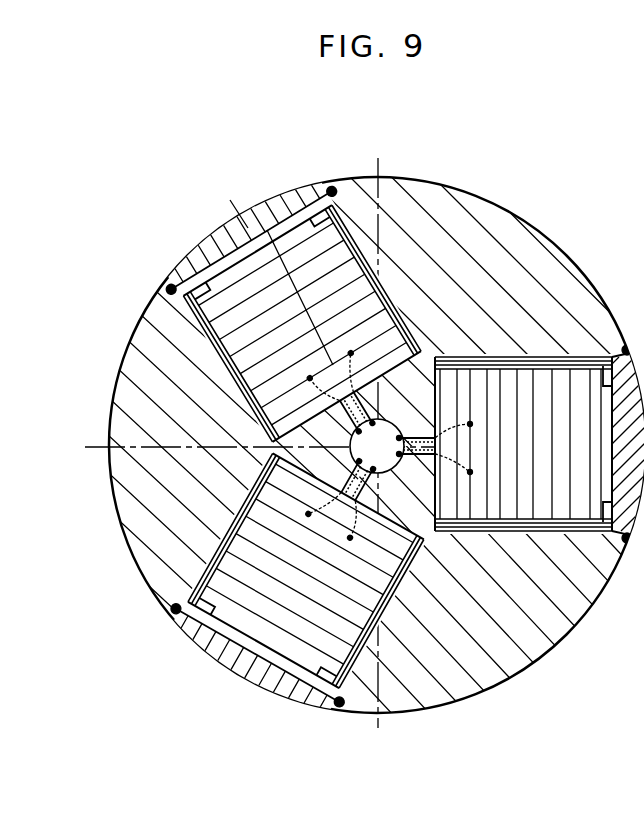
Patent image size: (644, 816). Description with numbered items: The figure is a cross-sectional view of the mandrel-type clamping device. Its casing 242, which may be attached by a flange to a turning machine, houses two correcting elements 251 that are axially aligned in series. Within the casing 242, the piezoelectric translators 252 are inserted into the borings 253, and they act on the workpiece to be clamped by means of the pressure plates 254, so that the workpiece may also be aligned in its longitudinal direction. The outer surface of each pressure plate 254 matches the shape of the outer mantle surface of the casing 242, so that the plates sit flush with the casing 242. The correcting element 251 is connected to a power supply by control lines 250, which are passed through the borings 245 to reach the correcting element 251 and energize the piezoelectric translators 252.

The casing 242 is at (462, 227).
The borings 245 is at (390, 468).
The control lines 250 is at (434, 360).
The correcting element 251 is at (246, 706).
The piezoelectric translators 252 is at (318, 550).
The borings 253 is at (217, 568).
The pressure plates 254 is at (292, 218).